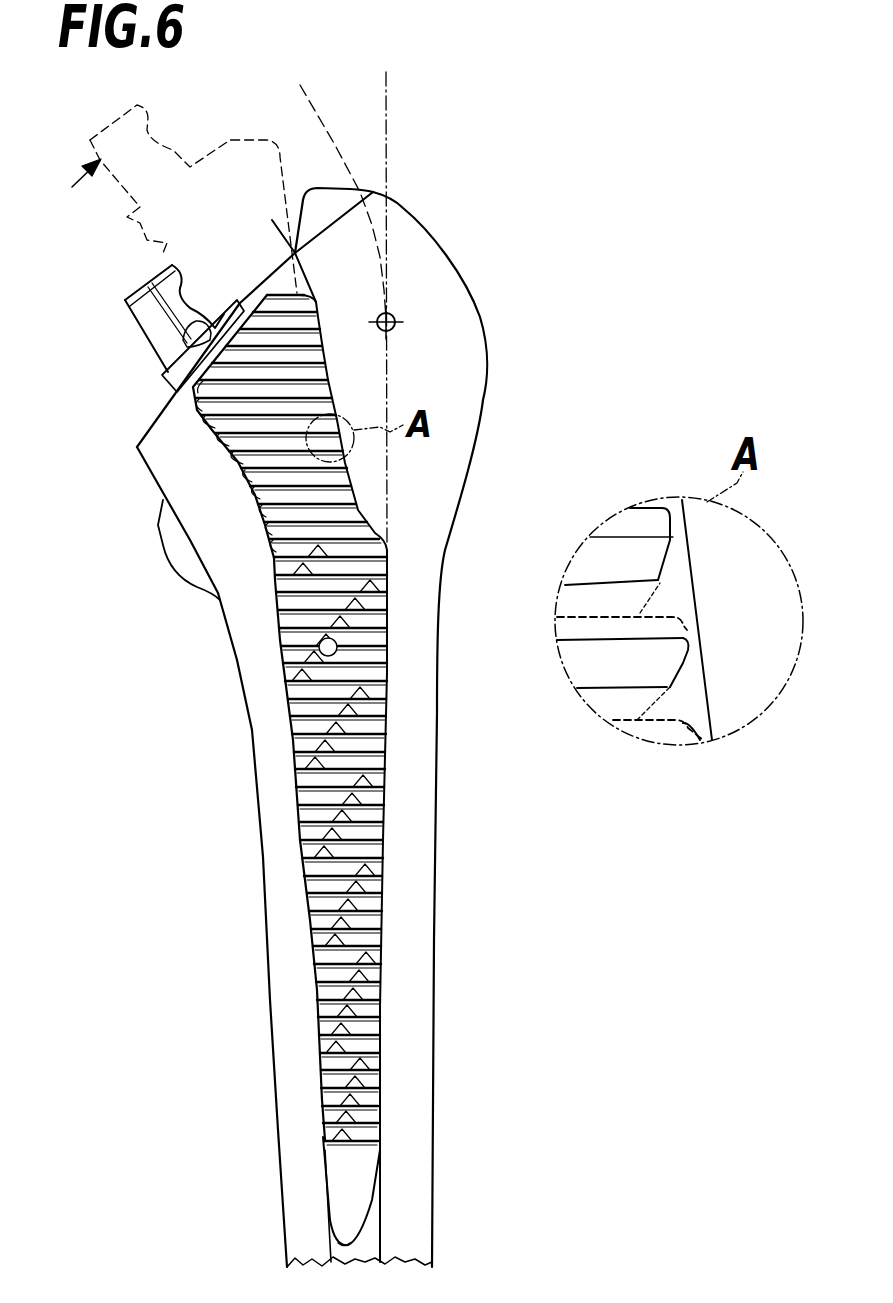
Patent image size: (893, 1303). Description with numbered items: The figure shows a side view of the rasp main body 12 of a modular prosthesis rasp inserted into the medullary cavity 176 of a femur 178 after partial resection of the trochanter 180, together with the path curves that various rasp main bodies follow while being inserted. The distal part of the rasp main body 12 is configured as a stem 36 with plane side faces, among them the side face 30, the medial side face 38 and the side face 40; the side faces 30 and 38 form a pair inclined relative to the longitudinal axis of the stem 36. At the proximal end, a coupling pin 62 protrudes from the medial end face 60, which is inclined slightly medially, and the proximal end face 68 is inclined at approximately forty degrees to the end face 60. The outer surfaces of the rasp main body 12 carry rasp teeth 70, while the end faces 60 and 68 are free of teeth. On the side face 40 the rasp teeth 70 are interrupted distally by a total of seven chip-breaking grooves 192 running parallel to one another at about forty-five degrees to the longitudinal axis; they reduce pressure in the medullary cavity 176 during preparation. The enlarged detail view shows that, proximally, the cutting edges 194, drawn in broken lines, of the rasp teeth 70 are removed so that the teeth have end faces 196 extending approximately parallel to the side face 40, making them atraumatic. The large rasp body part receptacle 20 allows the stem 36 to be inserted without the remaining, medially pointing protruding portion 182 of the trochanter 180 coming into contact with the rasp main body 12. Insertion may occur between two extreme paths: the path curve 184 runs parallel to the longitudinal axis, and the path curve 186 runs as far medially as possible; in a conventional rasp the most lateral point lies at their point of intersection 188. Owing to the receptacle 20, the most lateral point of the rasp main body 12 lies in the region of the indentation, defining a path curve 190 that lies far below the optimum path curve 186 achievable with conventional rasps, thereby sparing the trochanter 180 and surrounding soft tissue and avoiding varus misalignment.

The rasp main body 12 is at (72, 190).
The rasp body part receptacle 20 is at (337, 467).
The side face 30 is at (380, 820).
The stem 36 is at (361, 715).
The medial side face 38 is at (287, 812).
The side face 40 is at (373, 753).
The medial end face 60 is at (160, 372).
The coupling pin 62 is at (133, 294).
The proximal end face 68 is at (288, 294).
The rasp teeth 70 is at (383, 910).
The medullary cavity 176 is at (287, 727).
The femur 178 is at (412, 618).
The trochanter 180 is at (337, 225).
The protruding portion 182 is at (293, 252).
The path curve 184 is at (390, 108).
The path curve 186 is at (300, 113).
The point of intersection 188 is at (396, 317).
The path curve 190 is at (360, 397).
The chip-breaking grooves 192 is at (287, 667).
The cutting edges 194 is at (680, 622).
The end faces 196 is at (637, 597).